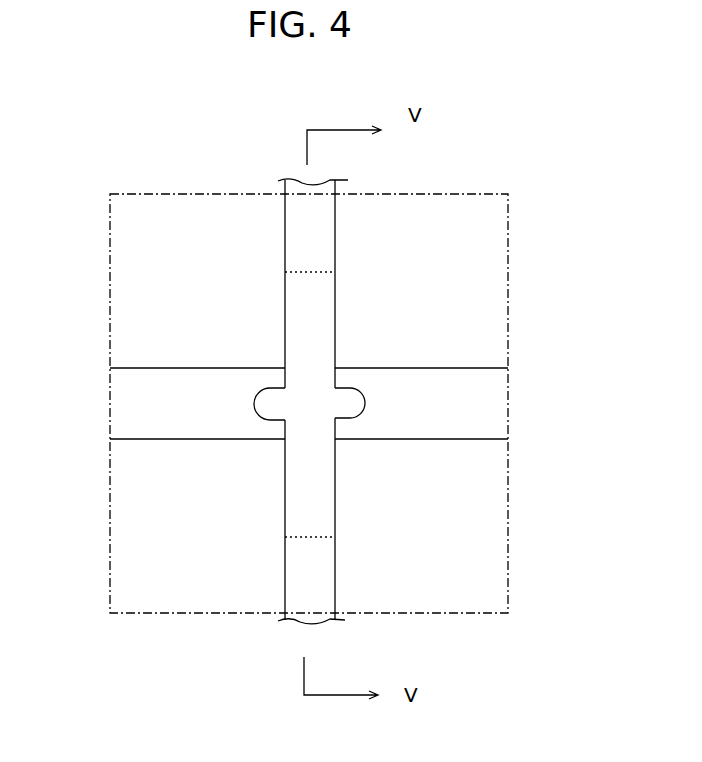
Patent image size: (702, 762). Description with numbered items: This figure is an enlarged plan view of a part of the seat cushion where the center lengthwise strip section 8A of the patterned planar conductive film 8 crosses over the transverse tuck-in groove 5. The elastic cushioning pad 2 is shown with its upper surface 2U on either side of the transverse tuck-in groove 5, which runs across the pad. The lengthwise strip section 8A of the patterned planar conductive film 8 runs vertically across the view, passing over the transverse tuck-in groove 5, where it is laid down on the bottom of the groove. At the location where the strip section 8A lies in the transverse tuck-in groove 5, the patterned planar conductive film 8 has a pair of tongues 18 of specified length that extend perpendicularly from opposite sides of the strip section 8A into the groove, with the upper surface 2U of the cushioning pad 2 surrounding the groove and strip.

The elastic cushioning pad 2 is at (503, 577).
The upper surface 2U is at (437, 290).
The transverse tuck-in groove 5 is at (131, 395).
The patterned planar conductive film 8 is at (272, 625).
The center lengthwise strip section 8A is at (288, 208).
The tongues 18 is at (255, 404).